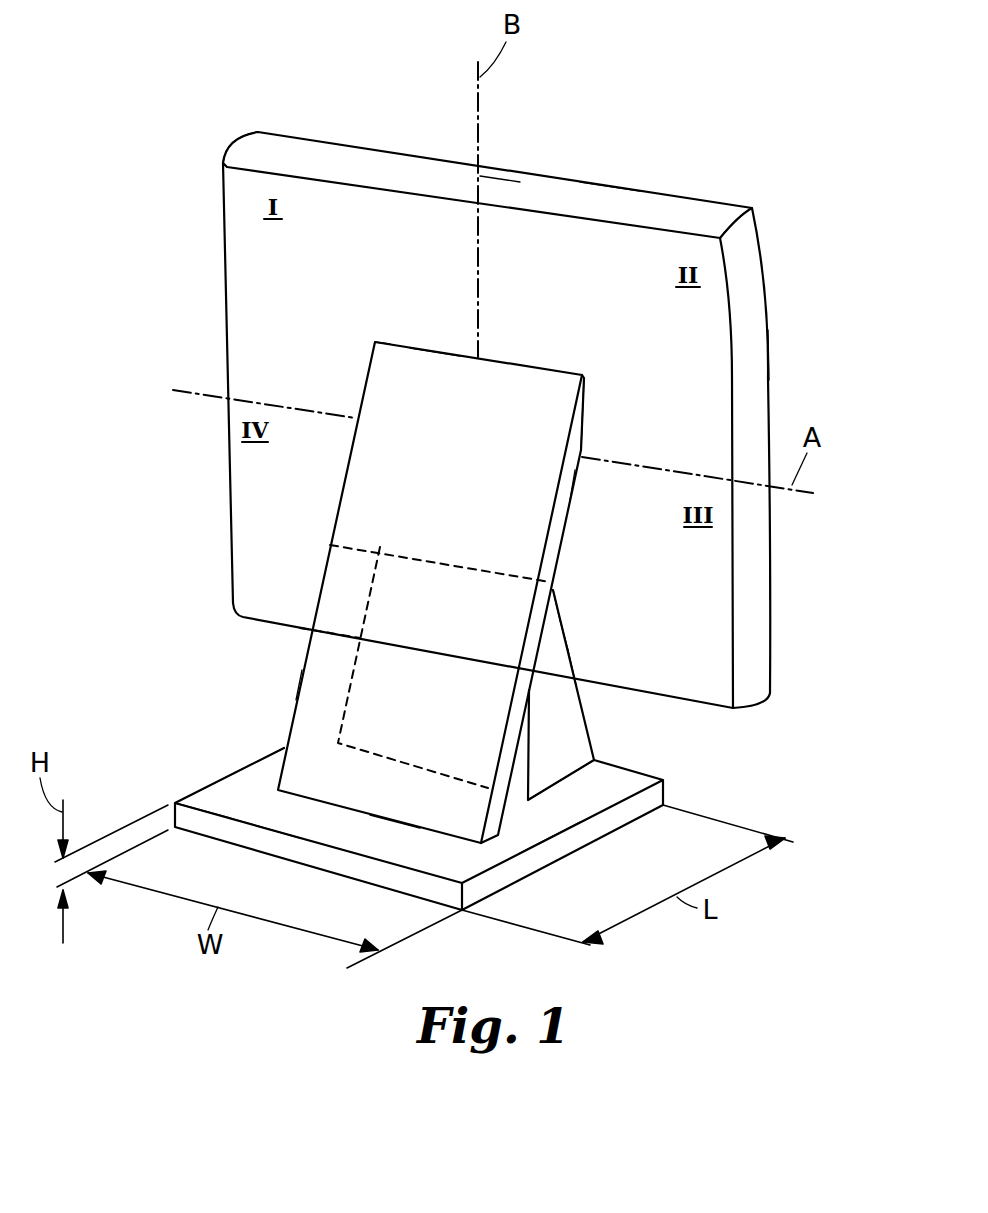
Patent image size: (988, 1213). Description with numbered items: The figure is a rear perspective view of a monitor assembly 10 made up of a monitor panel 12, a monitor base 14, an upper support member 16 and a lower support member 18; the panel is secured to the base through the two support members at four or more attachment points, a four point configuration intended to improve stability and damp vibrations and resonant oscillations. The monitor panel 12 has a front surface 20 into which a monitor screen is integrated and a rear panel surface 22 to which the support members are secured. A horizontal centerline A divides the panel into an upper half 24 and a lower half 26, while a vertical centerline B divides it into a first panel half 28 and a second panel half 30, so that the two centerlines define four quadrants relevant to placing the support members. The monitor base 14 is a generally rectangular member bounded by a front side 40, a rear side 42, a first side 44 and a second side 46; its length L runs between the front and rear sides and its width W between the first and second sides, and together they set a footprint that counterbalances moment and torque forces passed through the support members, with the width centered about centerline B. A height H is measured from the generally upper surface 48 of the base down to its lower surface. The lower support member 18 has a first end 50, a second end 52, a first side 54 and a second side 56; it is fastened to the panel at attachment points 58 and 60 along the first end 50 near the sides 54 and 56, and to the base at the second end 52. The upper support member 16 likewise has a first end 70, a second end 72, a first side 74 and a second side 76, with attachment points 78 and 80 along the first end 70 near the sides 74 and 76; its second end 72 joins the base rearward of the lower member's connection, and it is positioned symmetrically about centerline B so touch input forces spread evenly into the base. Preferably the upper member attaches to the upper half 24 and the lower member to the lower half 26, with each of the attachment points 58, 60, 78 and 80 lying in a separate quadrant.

The monitor assembly 10 is at (672, 82).
The monitor panel 12 is at (383, 160).
The monitor base 14 is at (220, 777).
The upper support member 16 is at (352, 469).
The lower support member 18 is at (563, 732).
The front surface 20 is at (602, 180).
The rear panel surface 22 is at (519, 223).
The upper half 24 is at (717, 337).
The lower half 26 is at (725, 572).
The first panel half 28 is at (290, 190).
The second panel half 30 is at (691, 248).
The front side 40 is at (645, 770).
The rear side 42 is at (268, 843).
The first side 44 is at (200, 783).
The second side 46 is at (555, 852).
The upper surface 48 is at (247, 780).
The first end 50 is at (553, 630).
The second end 52 is at (557, 767).
The first side 54 is at (367, 609).
The second side 56 is at (553, 673).
The attachment point 58 is at (330, 545).
The attachment point 60 is at (557, 592).
The first end 70 is at (435, 357).
The second end 72 is at (397, 803).
The first side 74 is at (297, 690).
The second side 76 is at (570, 475).
The attachment point 78 is at (372, 356).
The attachment point 80 is at (586, 408).